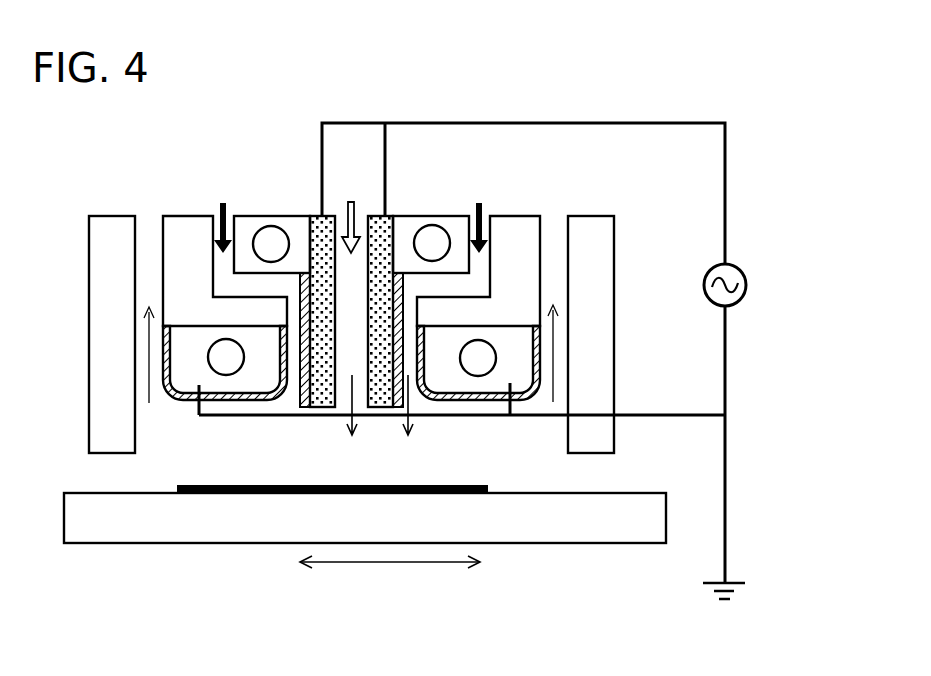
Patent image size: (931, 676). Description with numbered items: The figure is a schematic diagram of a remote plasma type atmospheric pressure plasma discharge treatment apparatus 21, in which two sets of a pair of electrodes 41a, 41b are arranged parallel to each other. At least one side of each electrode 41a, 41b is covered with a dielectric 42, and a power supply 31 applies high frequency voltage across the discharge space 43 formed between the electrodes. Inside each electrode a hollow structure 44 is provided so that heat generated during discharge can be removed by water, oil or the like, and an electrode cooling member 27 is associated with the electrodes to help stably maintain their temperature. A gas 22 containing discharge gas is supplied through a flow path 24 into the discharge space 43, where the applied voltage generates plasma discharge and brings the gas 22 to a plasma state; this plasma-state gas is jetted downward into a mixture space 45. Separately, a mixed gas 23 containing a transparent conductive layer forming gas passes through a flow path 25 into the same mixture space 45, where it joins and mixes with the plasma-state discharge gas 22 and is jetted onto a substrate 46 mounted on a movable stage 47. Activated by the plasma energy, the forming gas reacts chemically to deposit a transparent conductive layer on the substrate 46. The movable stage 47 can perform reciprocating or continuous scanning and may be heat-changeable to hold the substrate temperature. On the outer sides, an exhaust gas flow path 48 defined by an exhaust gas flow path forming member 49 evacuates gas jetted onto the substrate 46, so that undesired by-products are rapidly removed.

The atmospheric pressure plasma discharge treatment apparatus 21 is at (450, 92).
The gas containing discharge gas 22 is at (223, 200).
The mixed gas 23 is at (351, 198).
The flow path 24 is at (223, 280).
The flow path 25 is at (341, 225).
The electrode cooling member 27 is at (401, 228).
The power supply 31 is at (746, 282).
The electrode 41a is at (190, 372).
The electrode 41b is at (323, 408).
The dielectric 42 is at (222, 402).
The discharge space 43 is at (276, 398).
The hollow structure 44 is at (271, 235).
The mixture space 45 is at (453, 462).
The substrate 46 is at (177, 484).
The movable stage 47 is at (579, 523).
The exhaust gas flow path 48 is at (551, 230).
The exhaust gas flow path forming member 49 is at (601, 343).